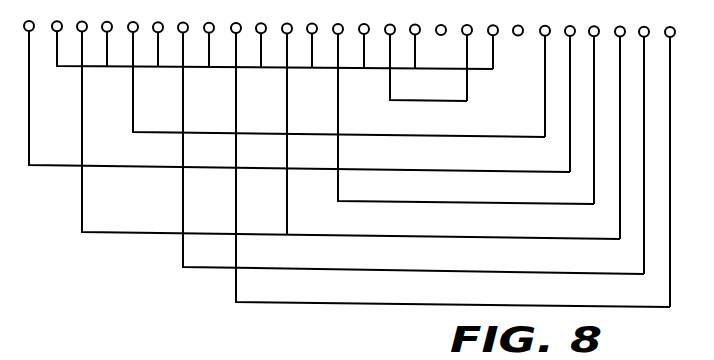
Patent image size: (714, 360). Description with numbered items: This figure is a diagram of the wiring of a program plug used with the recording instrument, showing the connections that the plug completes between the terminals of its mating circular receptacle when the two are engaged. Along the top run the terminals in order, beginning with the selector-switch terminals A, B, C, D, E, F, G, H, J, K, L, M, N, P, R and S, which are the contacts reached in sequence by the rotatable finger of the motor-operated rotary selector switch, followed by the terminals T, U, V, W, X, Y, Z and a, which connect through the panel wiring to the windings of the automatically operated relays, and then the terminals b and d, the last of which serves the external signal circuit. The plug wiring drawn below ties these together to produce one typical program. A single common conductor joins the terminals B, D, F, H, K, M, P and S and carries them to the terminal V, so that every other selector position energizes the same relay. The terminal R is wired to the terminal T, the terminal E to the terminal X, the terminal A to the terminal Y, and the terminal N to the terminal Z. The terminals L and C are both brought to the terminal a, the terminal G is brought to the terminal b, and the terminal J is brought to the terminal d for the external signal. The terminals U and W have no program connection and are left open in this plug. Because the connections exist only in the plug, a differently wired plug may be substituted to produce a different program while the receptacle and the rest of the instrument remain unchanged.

The terminal A is at (297, 86).
The terminal B is at (272, 34).
The terminal C is at (348, 120).
The terminal D is at (107, 34).
The terminal E is at (336, 69).
The terminal F is at (158, 34).
The terminal G is at (411, 137).
The terminal H is at (209, 34).
The terminal J is at (450, 154).
The terminal K is at (261, 34).
The terminal L is at (287, 118).
The terminal M is at (311, 35).
The terminal N is at (463, 103).
The terminal P is at (364, 35).
The terminal R is at (426, 52).
The terminal S is at (415, 36).
The terminal T is at (441, 19).
The terminal U is at (467, 52).
The terminal V is at (493, 36).
The terminal W is at (519, 20).
The terminal X is at (545, 71).
The terminal Y is at (570, 88).
The terminal Z is at (594, 104).
The terminal a is at (620, 123).
The terminal b is at (644, 140).
The terminal d is at (670, 156).